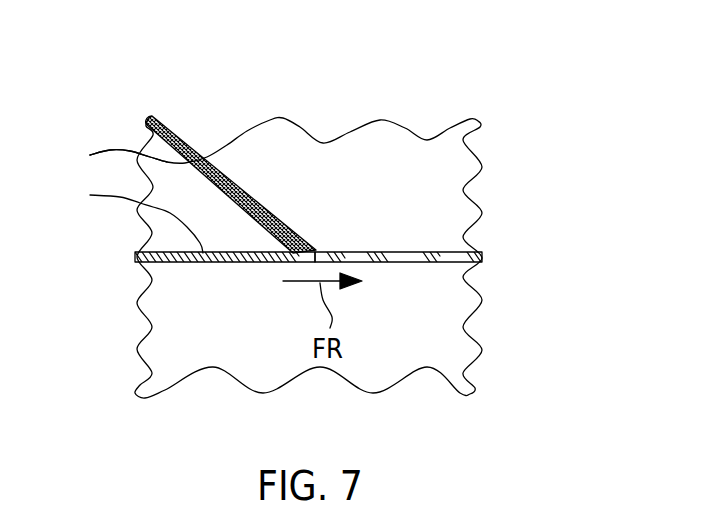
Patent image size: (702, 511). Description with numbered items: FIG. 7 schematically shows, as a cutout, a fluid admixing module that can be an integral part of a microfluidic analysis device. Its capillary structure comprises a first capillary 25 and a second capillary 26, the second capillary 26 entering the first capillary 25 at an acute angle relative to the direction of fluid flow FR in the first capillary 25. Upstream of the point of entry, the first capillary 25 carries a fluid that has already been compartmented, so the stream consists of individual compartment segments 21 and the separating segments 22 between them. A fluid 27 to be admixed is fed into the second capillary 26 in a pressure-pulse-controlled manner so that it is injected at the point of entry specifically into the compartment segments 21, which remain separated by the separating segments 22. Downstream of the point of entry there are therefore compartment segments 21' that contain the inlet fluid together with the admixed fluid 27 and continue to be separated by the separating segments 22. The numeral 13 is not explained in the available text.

The cover layer 13 is at (258, 160).
The compartment segment 21 is at (225, 351).
The compartment segment 21' is at (398, 351).
The separating segment 22 is at (383, 252).
The first capillary 25 is at (133, 217).
The second capillary 26 is at (115, 157).
The fluid to be admixed 27 is at (257, 197).